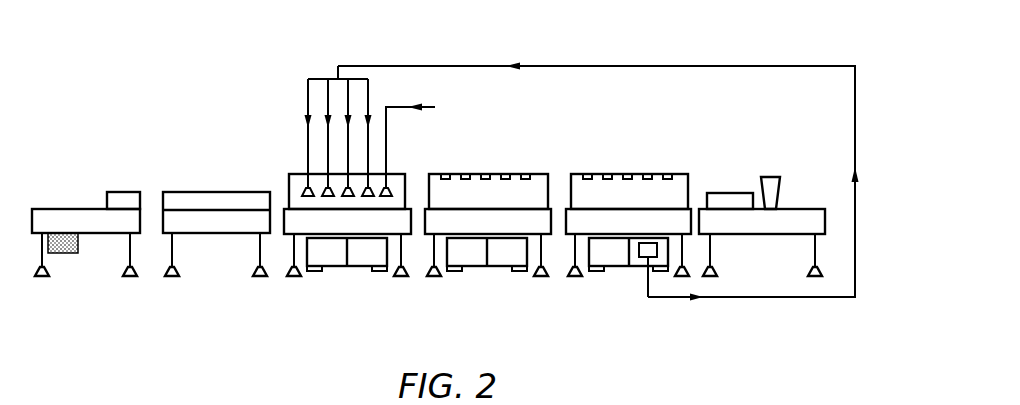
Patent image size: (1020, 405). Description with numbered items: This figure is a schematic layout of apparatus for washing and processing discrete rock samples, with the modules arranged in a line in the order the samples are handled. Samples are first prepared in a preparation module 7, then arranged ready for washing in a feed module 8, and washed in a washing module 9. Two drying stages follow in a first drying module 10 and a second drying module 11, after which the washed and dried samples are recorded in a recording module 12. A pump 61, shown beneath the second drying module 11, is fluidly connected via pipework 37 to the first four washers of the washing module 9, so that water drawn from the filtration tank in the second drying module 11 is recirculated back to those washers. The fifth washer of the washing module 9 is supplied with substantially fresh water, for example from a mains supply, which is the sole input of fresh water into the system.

The preparation module 7 is at (78, 299).
The feed module 8 is at (214, 305).
The washing module 9 is at (342, 195).
The first drying module 10 is at (480, 308).
The second drying module 11 is at (628, 267).
The recording module 12 is at (774, 137).
The pipework 37 is at (322, 79).
The pump 61 is at (644, 254).